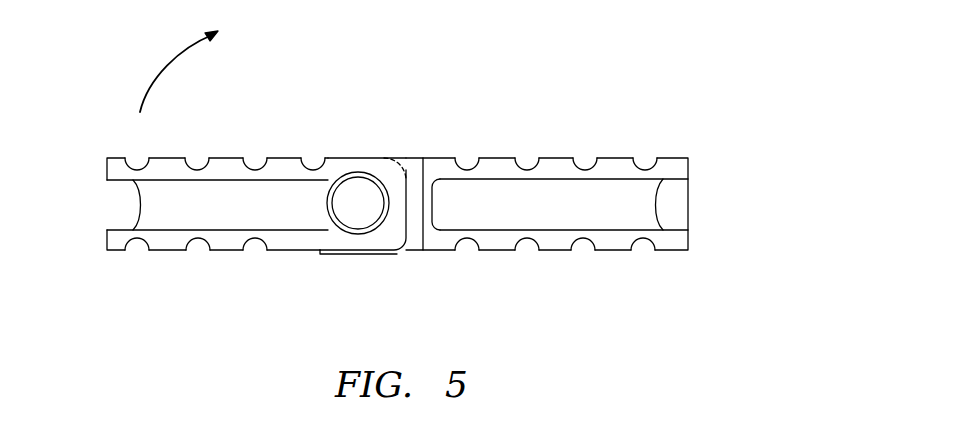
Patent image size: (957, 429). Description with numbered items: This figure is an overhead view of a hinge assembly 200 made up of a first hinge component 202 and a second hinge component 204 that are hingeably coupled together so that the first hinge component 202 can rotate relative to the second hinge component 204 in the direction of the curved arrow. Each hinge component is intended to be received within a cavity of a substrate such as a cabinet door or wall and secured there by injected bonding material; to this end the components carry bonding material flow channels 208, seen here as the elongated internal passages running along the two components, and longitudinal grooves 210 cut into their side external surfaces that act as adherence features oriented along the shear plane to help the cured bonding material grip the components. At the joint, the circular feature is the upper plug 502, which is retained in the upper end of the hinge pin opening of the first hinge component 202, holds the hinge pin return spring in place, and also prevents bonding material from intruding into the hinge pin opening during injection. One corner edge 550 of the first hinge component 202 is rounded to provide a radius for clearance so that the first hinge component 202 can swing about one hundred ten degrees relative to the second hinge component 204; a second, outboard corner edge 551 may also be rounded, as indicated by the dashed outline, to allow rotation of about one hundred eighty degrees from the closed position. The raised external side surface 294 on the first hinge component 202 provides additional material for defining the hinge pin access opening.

The hinge assembly 200 is at (698, 60).
The first hinge component 202 is at (112, 163).
The second hinge component 204 is at (672, 167).
The bonding material flow channels 208 is at (155, 207).
The longitudinal grooves 210 is at (313, 165).
The external side surface 294 is at (343, 254).
The upper plug 502 is at (353, 195).
The corner edge 550 is at (405, 250).
The second corner edge 551 is at (402, 160).